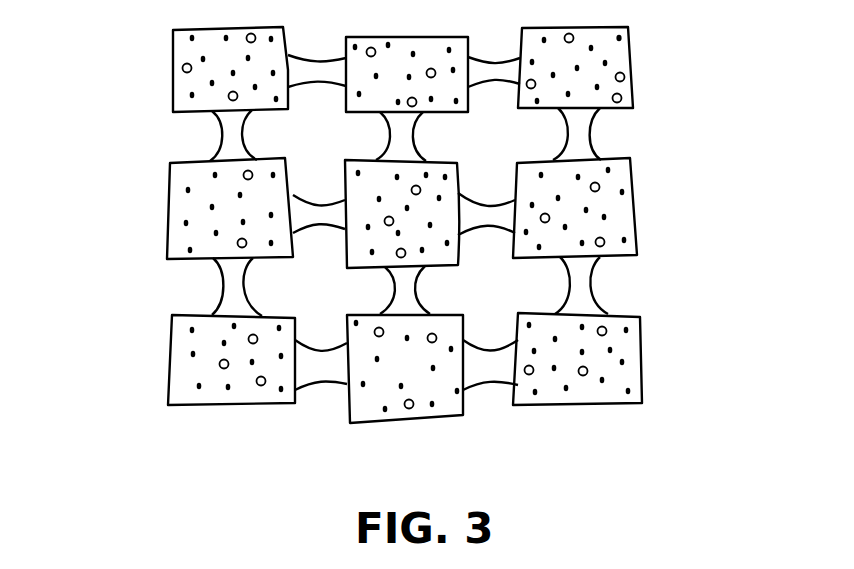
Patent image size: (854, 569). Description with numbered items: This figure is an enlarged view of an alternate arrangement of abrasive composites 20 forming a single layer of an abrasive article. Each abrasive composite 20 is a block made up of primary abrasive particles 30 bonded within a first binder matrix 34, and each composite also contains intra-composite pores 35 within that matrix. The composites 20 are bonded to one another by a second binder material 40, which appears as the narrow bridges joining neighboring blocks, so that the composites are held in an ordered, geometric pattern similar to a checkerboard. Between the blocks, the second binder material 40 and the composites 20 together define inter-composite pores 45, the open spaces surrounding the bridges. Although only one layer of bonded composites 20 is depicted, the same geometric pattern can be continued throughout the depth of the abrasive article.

The abrasive composites 20 is at (158, 226).
The primary abrasive particles 30 is at (619, 38).
The first binder matrix 34 is at (623, 218).
The intra-composite pores 35 is at (621, 97).
The second binder material 40 is at (599, 303).
The inter-composite pores 45 is at (571, 145).